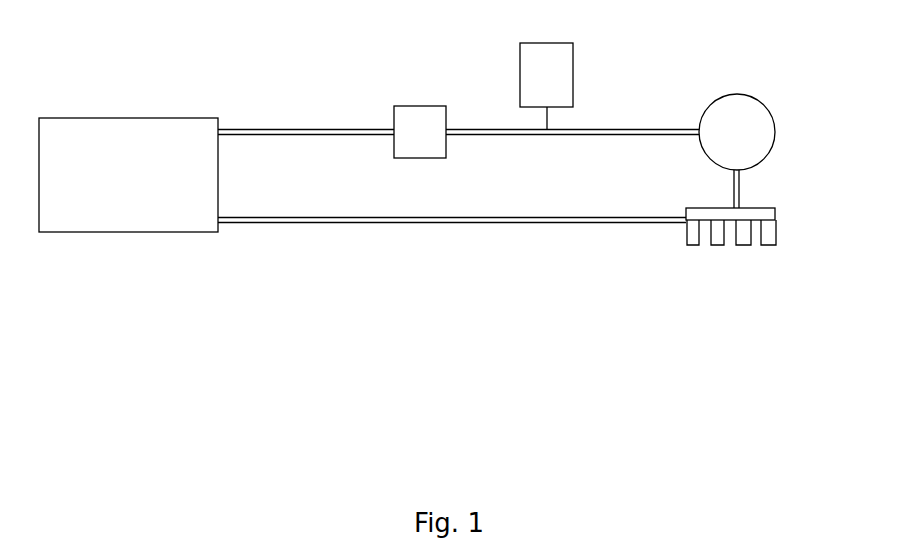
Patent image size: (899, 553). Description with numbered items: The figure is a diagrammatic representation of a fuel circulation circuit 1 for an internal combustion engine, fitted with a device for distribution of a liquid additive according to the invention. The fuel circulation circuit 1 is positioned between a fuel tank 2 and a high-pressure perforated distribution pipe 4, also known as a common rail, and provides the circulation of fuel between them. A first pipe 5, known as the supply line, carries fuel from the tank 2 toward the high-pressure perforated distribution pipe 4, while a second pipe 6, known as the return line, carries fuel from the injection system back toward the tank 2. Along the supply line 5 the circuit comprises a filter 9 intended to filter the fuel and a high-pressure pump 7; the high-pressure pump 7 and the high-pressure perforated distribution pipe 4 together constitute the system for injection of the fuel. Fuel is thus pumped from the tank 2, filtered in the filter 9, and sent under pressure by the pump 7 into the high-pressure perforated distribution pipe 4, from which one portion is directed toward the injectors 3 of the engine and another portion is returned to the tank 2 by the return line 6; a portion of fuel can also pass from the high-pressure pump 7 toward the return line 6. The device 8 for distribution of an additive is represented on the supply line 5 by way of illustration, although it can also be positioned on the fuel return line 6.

The fuel circulation circuit 1 is at (485, 333).
The fuel tank 2 is at (117, 155).
The injectors 3 is at (698, 232).
The high-pressure perforated distribution pipe 4 is at (775, 222).
The first pipe 5 is at (292, 128).
The second pipe 6 is at (332, 219).
The high-pressure pump 7 is at (737, 133).
The device for distribution of a liquid additive 8 is at (558, 82).
The filter 9 is at (407, 132).